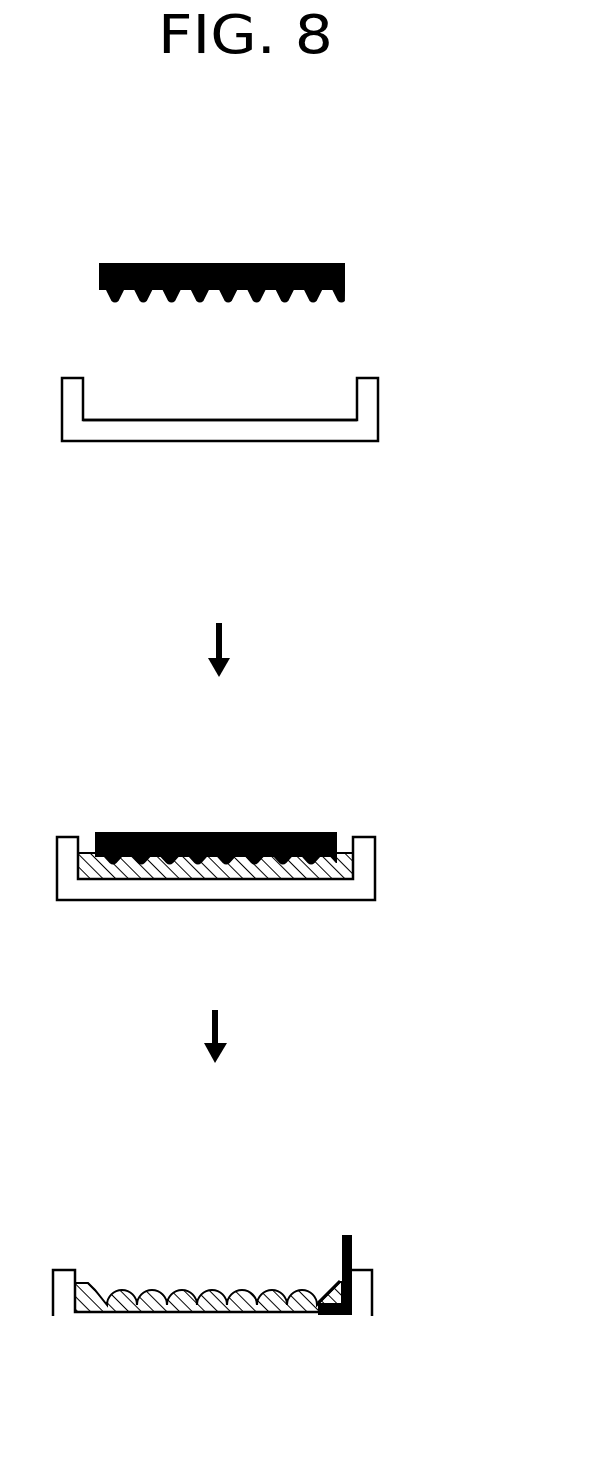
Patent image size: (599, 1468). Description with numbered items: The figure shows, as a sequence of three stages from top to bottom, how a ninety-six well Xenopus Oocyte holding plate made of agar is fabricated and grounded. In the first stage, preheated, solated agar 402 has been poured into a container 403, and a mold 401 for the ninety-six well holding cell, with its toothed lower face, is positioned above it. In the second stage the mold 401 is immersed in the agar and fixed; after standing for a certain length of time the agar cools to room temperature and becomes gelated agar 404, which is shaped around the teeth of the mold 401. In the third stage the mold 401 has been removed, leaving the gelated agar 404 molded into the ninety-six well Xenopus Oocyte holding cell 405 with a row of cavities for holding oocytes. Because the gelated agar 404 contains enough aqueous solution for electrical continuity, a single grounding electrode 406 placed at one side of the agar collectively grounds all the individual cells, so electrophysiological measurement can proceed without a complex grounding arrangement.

The mold 401 is at (290, 265).
The agar 402 is at (185, 397).
The container 403 is at (368, 405).
The gelated agar 404 is at (353, 860).
The 96 well Xenopus Oocyte holding cell 405 is at (150, 1297).
The grounding electrode 406 is at (352, 1253).